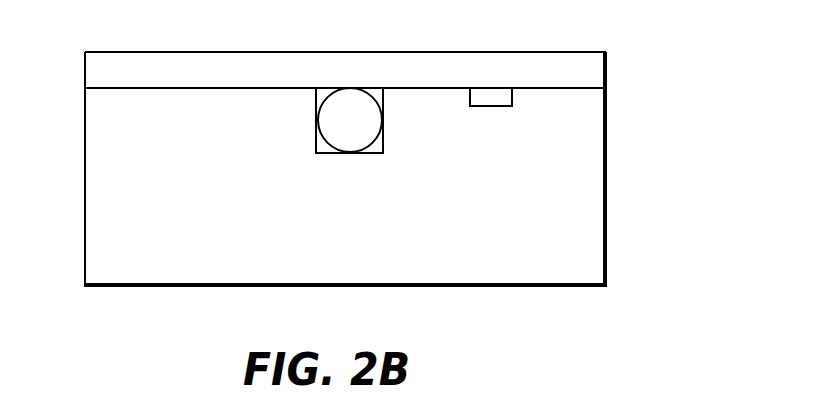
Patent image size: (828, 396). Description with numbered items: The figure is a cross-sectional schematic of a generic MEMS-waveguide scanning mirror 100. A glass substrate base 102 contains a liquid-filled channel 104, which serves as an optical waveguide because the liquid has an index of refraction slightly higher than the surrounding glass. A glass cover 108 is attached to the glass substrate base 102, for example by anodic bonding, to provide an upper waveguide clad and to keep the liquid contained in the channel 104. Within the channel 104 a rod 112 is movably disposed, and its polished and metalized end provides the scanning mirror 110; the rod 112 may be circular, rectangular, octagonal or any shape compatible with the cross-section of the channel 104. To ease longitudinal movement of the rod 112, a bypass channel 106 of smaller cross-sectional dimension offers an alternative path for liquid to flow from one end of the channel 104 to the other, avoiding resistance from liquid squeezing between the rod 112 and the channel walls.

The MEMS-waveguide scanning mirror 100 is at (622, 121).
The glass substrate base 102 is at (443, 262).
The liquid-filled channel 104 is at (315, 153).
The bypass channel 106 is at (476, 107).
The glass cover 108 is at (165, 82).
The scanning mirror 110 is at (337, 120).
The rod 112 is at (367, 90).